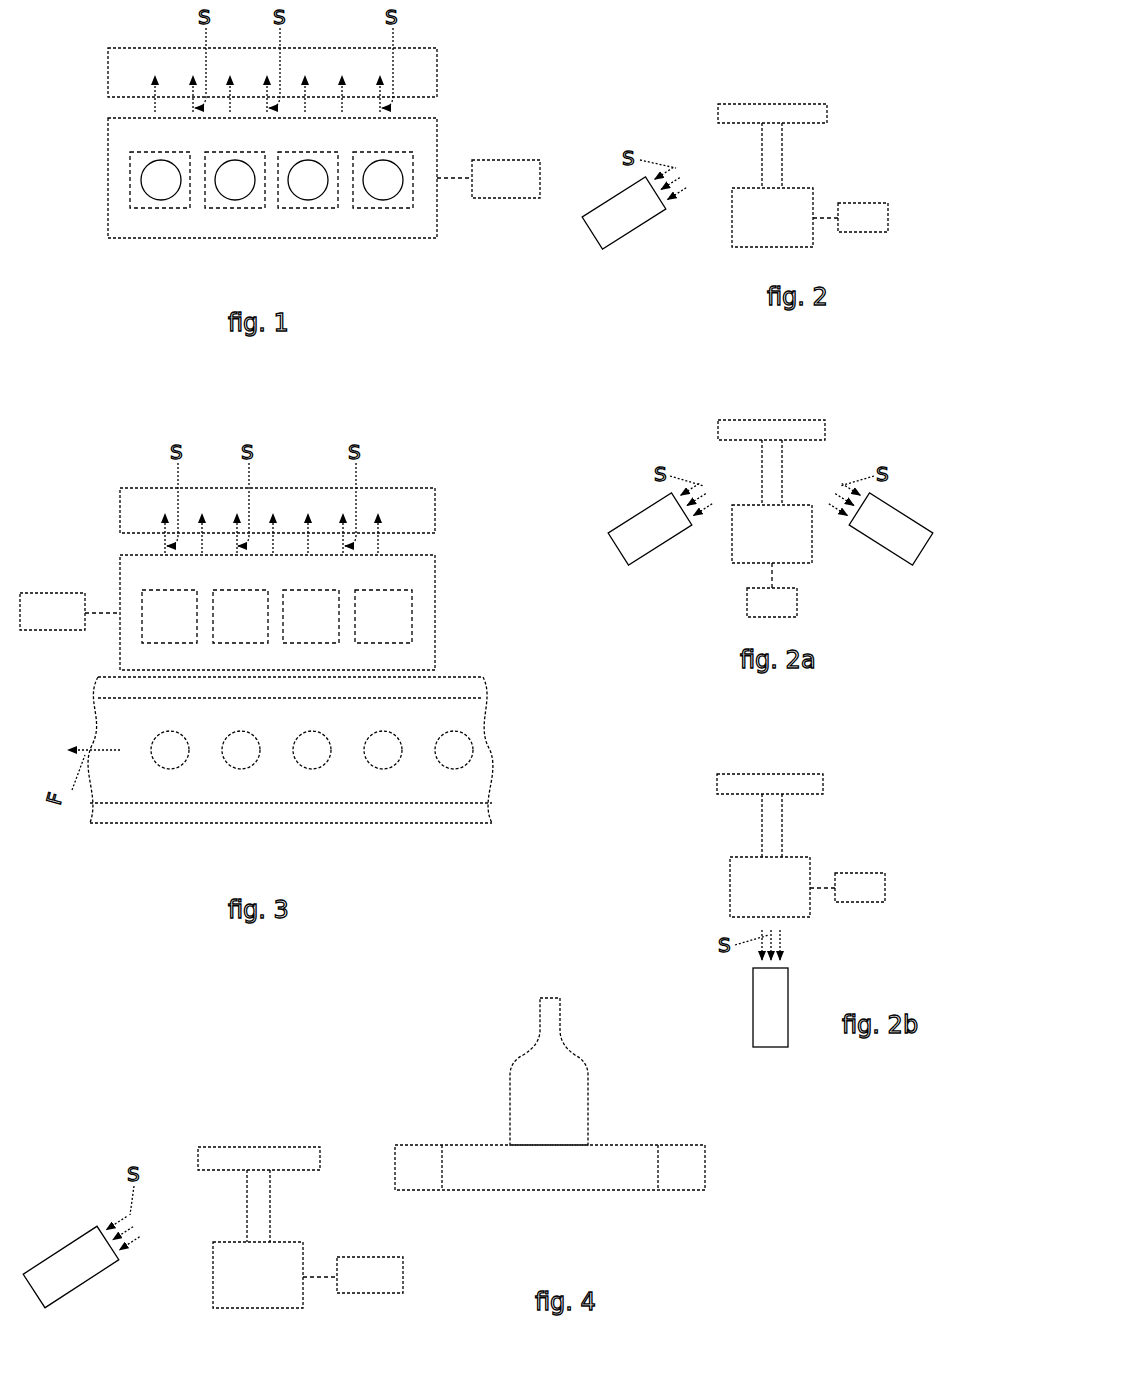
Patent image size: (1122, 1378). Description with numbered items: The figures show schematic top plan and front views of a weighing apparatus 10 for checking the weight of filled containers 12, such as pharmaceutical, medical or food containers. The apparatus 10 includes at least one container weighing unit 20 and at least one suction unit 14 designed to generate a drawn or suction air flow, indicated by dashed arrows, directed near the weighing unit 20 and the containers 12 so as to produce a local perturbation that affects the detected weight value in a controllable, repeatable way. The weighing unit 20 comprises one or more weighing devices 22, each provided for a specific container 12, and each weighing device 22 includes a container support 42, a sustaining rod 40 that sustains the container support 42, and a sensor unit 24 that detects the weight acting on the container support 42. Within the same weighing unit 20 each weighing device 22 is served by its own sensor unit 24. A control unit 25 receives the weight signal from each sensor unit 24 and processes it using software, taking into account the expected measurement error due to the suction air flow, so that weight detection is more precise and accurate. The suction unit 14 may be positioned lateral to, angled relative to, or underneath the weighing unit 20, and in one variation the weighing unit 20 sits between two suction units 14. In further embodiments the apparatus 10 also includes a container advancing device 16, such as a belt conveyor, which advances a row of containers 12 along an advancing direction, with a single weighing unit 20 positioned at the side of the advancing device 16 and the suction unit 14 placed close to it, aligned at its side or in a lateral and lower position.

In FIG. 1, the weighing apparatus 10 is at (504, 63).
In FIG. 2, the weighing apparatus 10 is at (853, 102).
In FIG. 2A, the weighing apparatus 10 is at (853, 420).
In FIG. 2B, the weighing apparatus 10 is at (852, 772).
In FIG. 3, the weighing apparatus 10 is at (77, 503).
In FIG. 4, the weighing apparatus 10 is at (152, 1107).
In FIG. 1, the container 12 is at (158, 181).
In FIG. 3, the container 12 is at (241, 752).
In FIG. 4, the container 12 is at (535, 1090).
In FIG. 1, the suction unit 14 is at (104, 81).
In FIG. 2, the suction unit 14 is at (592, 237).
In FIG. 2A, the suction unit 14 is at (888, 556).
In FIG. 2B, the suction unit 14 is at (773, 1052).
In FIG. 3, the suction unit 14 is at (116, 521).
In FIG. 4, the suction unit 14 is at (80, 1294).
In FIG. 3, the container advancing device 16 is at (503, 732).
In FIG. 4, the container advancing device 16 is at (718, 1169).
In FIG. 1, the container weighing unit 20 is at (465, 141).
In FIG. 2, the container weighing unit 20 is at (690, 110).
In FIG. 2A, the container weighing unit 20 is at (678, 425).
In FIG. 2B, the container weighing unit 20 is at (693, 783).
In FIG. 3, the container weighing unit 20 is at (455, 627).
In FIG. 4, the container weighing unit 20 is at (303, 1130).
In FIG. 1, the weighing device 22 is at (152, 209).
In FIG. 3, the weighing device 22 is at (410, 606).
In FIG. 2, the sensor unit 24 is at (748, 225).
In FIG. 2A, the sensor unit 24 is at (748, 543).
In FIG. 2B, the sensor unit 24 is at (747, 893).
In FIG. 4, the sensor unit 24 is at (230, 1285).
In FIG. 1, the control unit 25 is at (507, 172).
In FIG. 2, the control unit 25 is at (862, 218).
In FIG. 2A, the control unit 25 is at (755, 605).
In FIG. 2B, the control unit 25 is at (862, 892).
In FIG. 3, the control unit 25 is at (57, 612).
In FIG. 4, the control unit 25 is at (370, 1283).
In FIG. 2, the sustaining rod 40 is at (773, 162).
In FIG. 2A, the sustaining rod 40 is at (773, 463).
In FIG. 2B, the sustaining rod 40 is at (773, 815).
In FIG. 4, the sustaining rod 40 is at (260, 1209).
In FIG. 2, the container support 42 is at (748, 113).
In FIG. 2A, the container support 42 is at (748, 430).
In FIG. 2B, the container support 42 is at (747, 782).
In FIG. 4, the container support 42 is at (252, 1157).